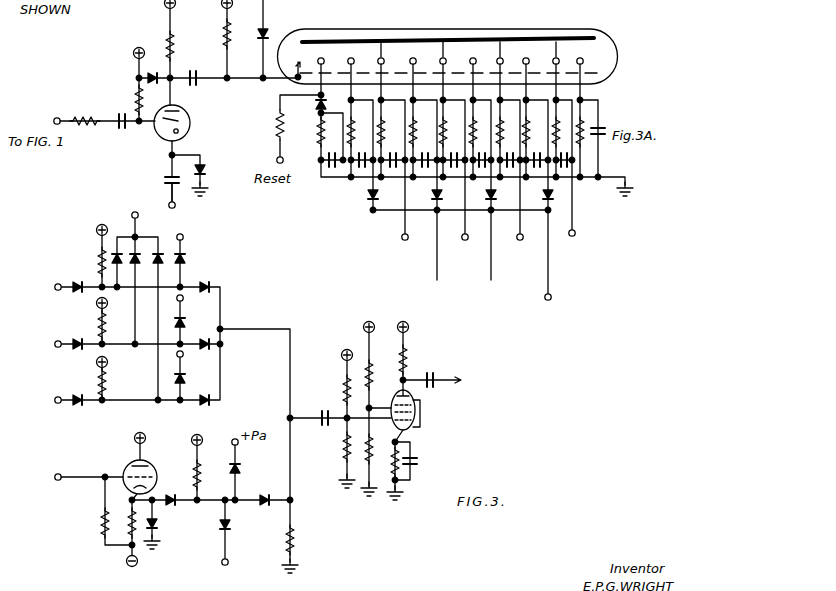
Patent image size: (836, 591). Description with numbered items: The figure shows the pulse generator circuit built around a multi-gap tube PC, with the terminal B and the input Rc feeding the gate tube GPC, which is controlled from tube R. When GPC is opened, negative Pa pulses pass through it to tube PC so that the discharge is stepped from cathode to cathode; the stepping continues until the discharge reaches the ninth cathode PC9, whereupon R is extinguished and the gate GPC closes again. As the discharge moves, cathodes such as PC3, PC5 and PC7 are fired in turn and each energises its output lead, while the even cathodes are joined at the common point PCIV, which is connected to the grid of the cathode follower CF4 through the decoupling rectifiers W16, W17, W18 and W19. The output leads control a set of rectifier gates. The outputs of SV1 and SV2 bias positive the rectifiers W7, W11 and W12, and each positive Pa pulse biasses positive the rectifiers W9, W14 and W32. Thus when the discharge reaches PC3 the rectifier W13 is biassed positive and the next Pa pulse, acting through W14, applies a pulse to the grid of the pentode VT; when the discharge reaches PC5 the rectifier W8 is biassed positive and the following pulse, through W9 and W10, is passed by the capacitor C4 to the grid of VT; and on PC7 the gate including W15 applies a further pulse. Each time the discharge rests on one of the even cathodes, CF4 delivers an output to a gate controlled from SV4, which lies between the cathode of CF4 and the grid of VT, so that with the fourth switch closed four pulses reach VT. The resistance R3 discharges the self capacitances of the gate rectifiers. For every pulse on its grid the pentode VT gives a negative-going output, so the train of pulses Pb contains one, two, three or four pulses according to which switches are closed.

In FIG. 3A, the positive supply terminal B is at (193, 86).
In FIG. 3A, the input terminal from FIG. 1 Rc is at (100, 114).
In FIG. 3A, the gate tube GPC is at (190, 156).
In FIG. 3A, the multi-gap tube PC is at (448, 45).
In FIG. 3A, the decoupling rectifier W16 is at (371, 201).
In FIG. 3A, the decoupling rectifier W17 is at (443, 240).
In FIG. 3A, the decoupling rectifier W18 is at (494, 240).
In FIG. 3A, the decoupling rectifier W19 is at (551, 197).
In FIG. 3A, the third cathode of tube PC PC3 is at (396, 247).
In FIG. 3, the third cathode of tube PC PC3 is at (45, 354).
In FIG. 3A, the fifth cathode of tube PC PC5 is at (458, 247).
In FIG. 3, the fifth cathode of tube PC PC5 is at (43, 283).
In FIG. 3A, the seventh cathode of tube PC PC7 is at (510, 247).
In FIG. 3, the seventh cathode of tube PC PC7 is at (46, 410).
In FIG. 3A, the ninth cathode of tube PC PC9 is at (590, 250).
In FIG. 3A, the common point of even cathodes PCIV is at (561, 308).
In FIG. 3, the common point of even cathodes PCIV is at (81, 471).
In FIG. 3, the rectifier W8 is at (76, 282).
In FIG. 3, the rectifier W13 is at (77, 342).
In FIG. 3, the rectifier W15 is at (74, 390).
In FIG. 3, the rectifier W9 is at (117, 251).
In FIG. 3, the rectifier W14 is at (136, 256).
In FIG. 3, the rectifier W7 is at (184, 256).
In FIG. 3, the rectifier W32 is at (159, 265).
In FIG. 3, the rectifier W10 is at (212, 284).
In FIG. 3, the rectifier W11 is at (183, 324).
In FIG. 3, the rectifier W12 is at (185, 379).
In FIG. 3, the switch valve for S1 SV1 is at (183, 237).
In FIG. 3, the switch valve for S2 SV2 is at (194, 346).
In FIG. 3, the switch valve for S4 SV4 is at (239, 534).
In FIG. 3, the stepping pulses Pa is at (167, 210).
In FIG. 3, the output pulse train Pb is at (482, 389).
In FIG. 3, the cathode follower CF4 is at (128, 467).
In FIG. 3, the coupling capacitor C4 is at (318, 408).
In FIG. 3, the pentode VT is at (416, 411).
In FIG. 3, the resistance R3 is at (299, 535).